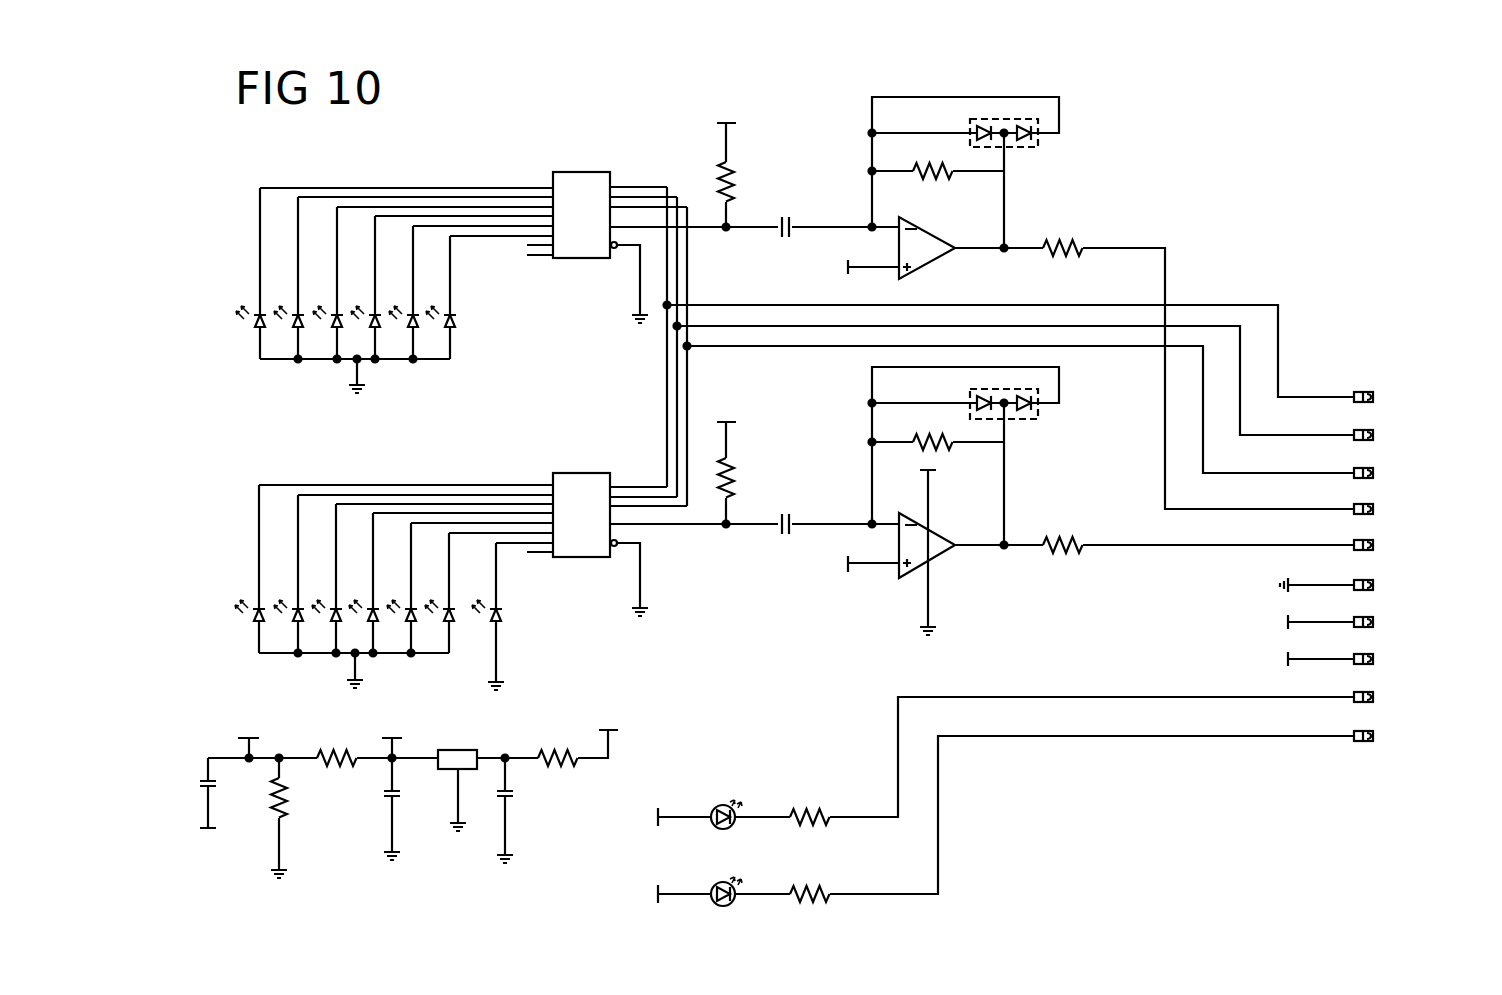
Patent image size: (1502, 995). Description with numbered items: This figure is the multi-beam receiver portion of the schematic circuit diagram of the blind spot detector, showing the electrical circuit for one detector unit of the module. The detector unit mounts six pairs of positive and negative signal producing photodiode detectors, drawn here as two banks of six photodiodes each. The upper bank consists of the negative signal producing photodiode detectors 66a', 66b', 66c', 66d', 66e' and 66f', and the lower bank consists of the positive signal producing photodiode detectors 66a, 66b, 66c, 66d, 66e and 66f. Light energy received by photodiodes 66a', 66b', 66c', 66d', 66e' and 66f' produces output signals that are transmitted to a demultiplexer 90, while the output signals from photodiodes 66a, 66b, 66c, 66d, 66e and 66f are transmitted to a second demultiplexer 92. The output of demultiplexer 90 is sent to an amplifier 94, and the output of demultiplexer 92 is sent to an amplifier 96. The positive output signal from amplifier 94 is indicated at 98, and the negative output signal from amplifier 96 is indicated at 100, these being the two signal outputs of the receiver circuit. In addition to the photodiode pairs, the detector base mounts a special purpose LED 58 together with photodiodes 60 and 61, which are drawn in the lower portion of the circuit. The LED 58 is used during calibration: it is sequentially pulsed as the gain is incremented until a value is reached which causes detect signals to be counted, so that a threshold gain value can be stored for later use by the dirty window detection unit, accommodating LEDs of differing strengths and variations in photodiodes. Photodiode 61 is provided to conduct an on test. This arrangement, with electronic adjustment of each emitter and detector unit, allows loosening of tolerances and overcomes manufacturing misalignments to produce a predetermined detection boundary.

The special purpose LED 58 is at (496, 653).
The photodiode 60 is at (727, 880).
The photodiode 61 is at (727, 805).
The positive signal producing photodiode detector 66a is at (356, 576).
The positive signal producing photodiode detector 66b is at (377, 600).
The positive signal producing photodiode detector 66c is at (414, 614).
The positive signal producing photodiode detector 66d is at (451, 623).
The positive signal producing photodiode detector 66e is at (470, 635).
The positive signal producing photodiode detector 66f is at (491, 622).
The negative signal producing photodiode detector 66a' is at (356, 290).
The negative signal producing photodiode detector 66b' is at (377, 314).
The negative signal producing photodiode detector 66c' is at (414, 328).
The negative signal producing photodiode detector 66d' is at (452, 332).
The negative signal producing photodiode detector 66e' is at (471, 318).
The negative signal producing photodiode detector 66f' is at (504, 303).
The demultiplexer 90 is at (608, 172).
The demultiplexer 92 is at (597, 473).
The amplifier 94 is at (940, 237).
The amplifier 96 is at (940, 535).
The positive output signal 98 is at (1374, 511).
The negative output signal 100 is at (1374, 545).